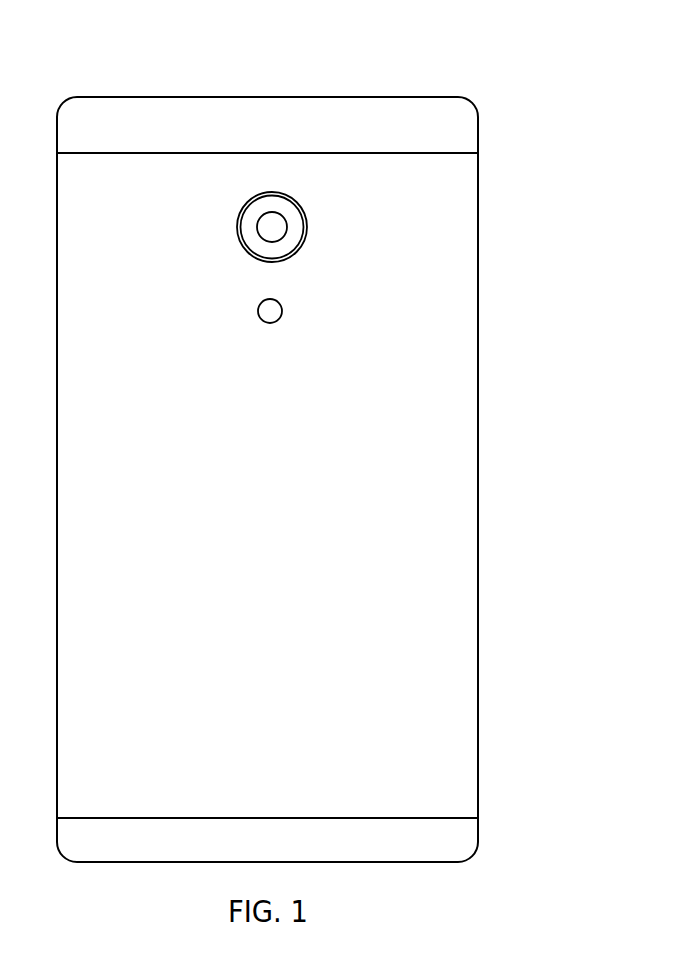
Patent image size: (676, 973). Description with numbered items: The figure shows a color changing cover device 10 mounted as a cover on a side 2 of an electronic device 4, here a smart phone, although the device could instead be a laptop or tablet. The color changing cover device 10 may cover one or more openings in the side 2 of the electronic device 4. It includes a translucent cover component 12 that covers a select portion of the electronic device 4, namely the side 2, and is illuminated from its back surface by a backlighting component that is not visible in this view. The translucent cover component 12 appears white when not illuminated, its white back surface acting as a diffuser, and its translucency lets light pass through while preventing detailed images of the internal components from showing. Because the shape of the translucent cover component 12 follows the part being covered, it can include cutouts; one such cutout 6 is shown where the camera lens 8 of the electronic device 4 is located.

The side 2 is at (390, 117).
The electronic device 4 is at (305, 97).
The cutout 6 is at (306, 227).
The camera lens 8 is at (270, 225).
The color changing cover device 10 is at (460, 428).
The translucent cover component 12 is at (460, 532).